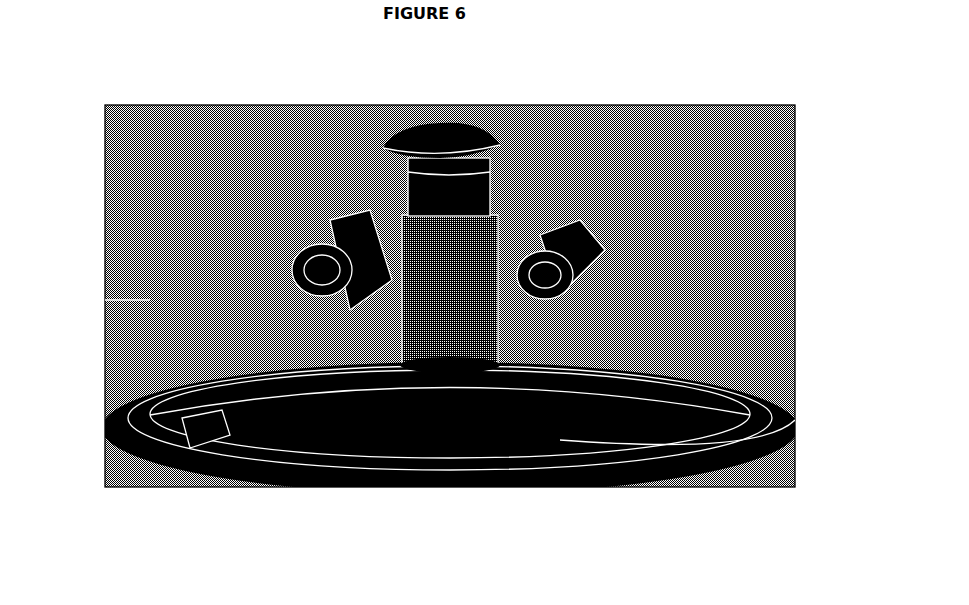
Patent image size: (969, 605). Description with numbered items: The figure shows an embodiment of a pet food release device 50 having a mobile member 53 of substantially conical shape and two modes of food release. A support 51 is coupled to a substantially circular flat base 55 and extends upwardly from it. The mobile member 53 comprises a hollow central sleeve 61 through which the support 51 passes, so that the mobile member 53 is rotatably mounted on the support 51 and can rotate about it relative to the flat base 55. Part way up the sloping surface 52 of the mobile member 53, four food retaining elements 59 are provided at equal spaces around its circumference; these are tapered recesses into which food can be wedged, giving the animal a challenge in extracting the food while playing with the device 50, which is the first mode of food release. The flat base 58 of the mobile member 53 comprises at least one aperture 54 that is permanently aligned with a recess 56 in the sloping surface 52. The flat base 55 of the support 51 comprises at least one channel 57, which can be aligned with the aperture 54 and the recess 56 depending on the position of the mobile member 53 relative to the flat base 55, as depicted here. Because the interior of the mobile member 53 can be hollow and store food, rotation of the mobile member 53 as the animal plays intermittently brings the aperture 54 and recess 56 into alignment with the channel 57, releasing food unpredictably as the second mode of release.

The device 50 is at (435, 302).
The support 51 is at (550, 107).
The sloping surface 52 is at (732, 107).
The mobile member 53 is at (335, 125).
The aperture 54 is at (277, 487).
The flat base 55 is at (680, 487).
The recess 56 is at (105, 245).
The channel 57 is at (212, 487).
The flat base of the mobile member 58 is at (527, 487).
The food retaining elements 59 is at (240, 130).
The hollow central sleeve 61 is at (397, 487).